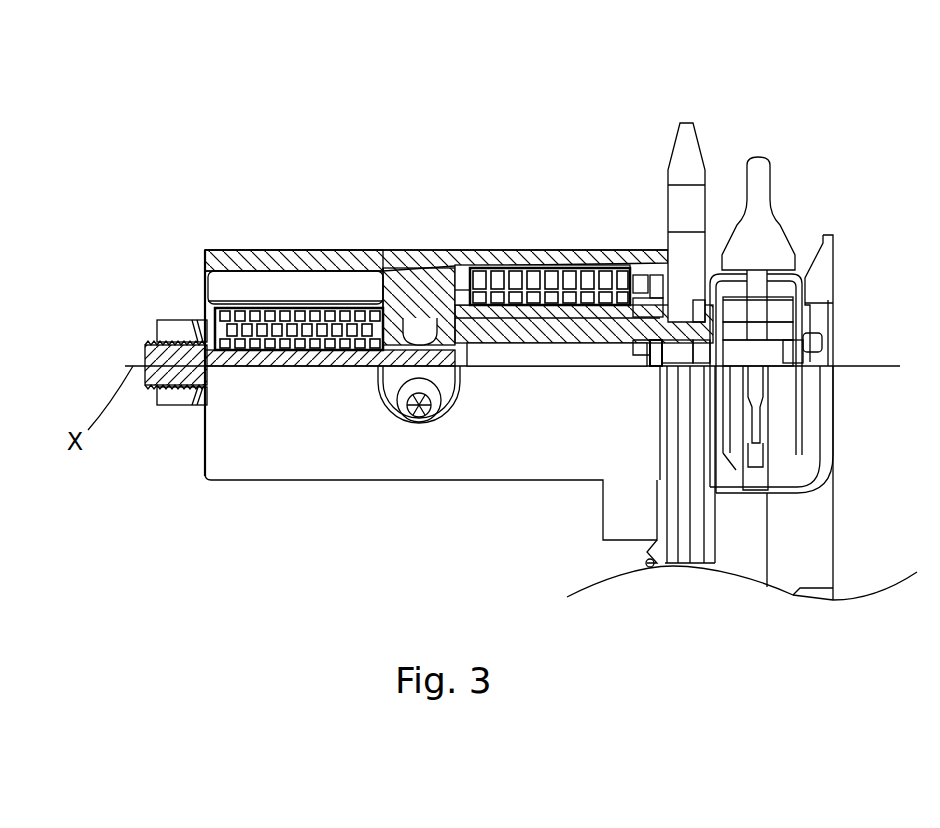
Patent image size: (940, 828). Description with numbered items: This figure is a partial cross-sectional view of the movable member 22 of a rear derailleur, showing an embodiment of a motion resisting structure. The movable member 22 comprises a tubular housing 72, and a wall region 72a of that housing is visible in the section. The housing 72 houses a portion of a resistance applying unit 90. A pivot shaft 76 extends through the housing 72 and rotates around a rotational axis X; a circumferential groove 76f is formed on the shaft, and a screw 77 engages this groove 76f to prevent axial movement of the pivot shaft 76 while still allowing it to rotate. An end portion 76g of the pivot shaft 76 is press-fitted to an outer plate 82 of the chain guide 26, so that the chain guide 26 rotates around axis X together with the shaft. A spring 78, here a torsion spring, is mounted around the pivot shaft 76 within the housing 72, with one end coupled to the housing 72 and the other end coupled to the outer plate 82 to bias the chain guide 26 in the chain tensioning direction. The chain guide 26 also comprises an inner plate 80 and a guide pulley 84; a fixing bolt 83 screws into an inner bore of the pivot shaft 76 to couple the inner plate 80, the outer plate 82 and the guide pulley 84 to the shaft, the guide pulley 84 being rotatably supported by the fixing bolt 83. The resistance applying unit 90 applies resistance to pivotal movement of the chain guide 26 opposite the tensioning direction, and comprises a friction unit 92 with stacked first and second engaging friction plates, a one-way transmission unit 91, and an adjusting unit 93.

The movable member 22 is at (537, 182).
The chain guide 26 is at (824, 118).
The tubular housing 72 is at (433, 258).
The housing wall portion 72a is at (313, 258).
The pivot shaft 76 is at (503, 345).
The circumferential groove 76f is at (412, 330).
The end portion 76g is at (680, 333).
The screw 77 is at (421, 420).
The spring 78 is at (500, 280).
The inner plate 80 is at (826, 262).
The outer plate 82 is at (677, 170).
The fixing bolt 83 is at (767, 340).
The guide pulley 84 is at (748, 230).
The resistance applying unit 90 is at (183, 303).
The one-way transmission unit 91 is at (268, 288).
The friction unit 92 is at (291, 360).
The adjusting unit 93 is at (171, 436).